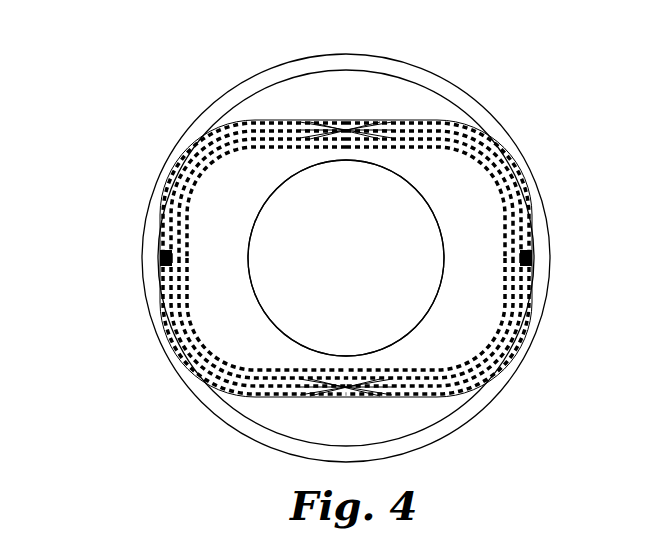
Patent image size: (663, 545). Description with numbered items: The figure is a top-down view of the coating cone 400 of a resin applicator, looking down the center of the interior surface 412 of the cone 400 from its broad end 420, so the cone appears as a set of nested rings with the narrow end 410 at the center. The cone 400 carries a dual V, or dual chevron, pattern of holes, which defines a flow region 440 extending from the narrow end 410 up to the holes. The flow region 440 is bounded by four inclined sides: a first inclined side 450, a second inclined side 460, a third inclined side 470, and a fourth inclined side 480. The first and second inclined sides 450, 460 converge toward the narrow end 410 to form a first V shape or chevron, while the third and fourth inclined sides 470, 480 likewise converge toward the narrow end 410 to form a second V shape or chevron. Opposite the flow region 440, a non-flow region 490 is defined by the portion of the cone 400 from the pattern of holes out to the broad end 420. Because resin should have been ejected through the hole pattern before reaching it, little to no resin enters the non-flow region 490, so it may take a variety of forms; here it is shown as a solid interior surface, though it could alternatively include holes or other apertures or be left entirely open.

The cone 400 is at (122, 141).
The narrow end 410 is at (420, 200).
The interior surface 412 is at (393, 428).
The broad end 420 is at (352, 55).
The flow region 440 is at (237, 279).
The first inclined side 450 is at (268, 130).
The second inclined side 460 is at (421, 132).
The third inclined side 470 is at (448, 360).
The fourth inclined side 480 is at (238, 355).
The non-flow region 490 is at (366, 107).